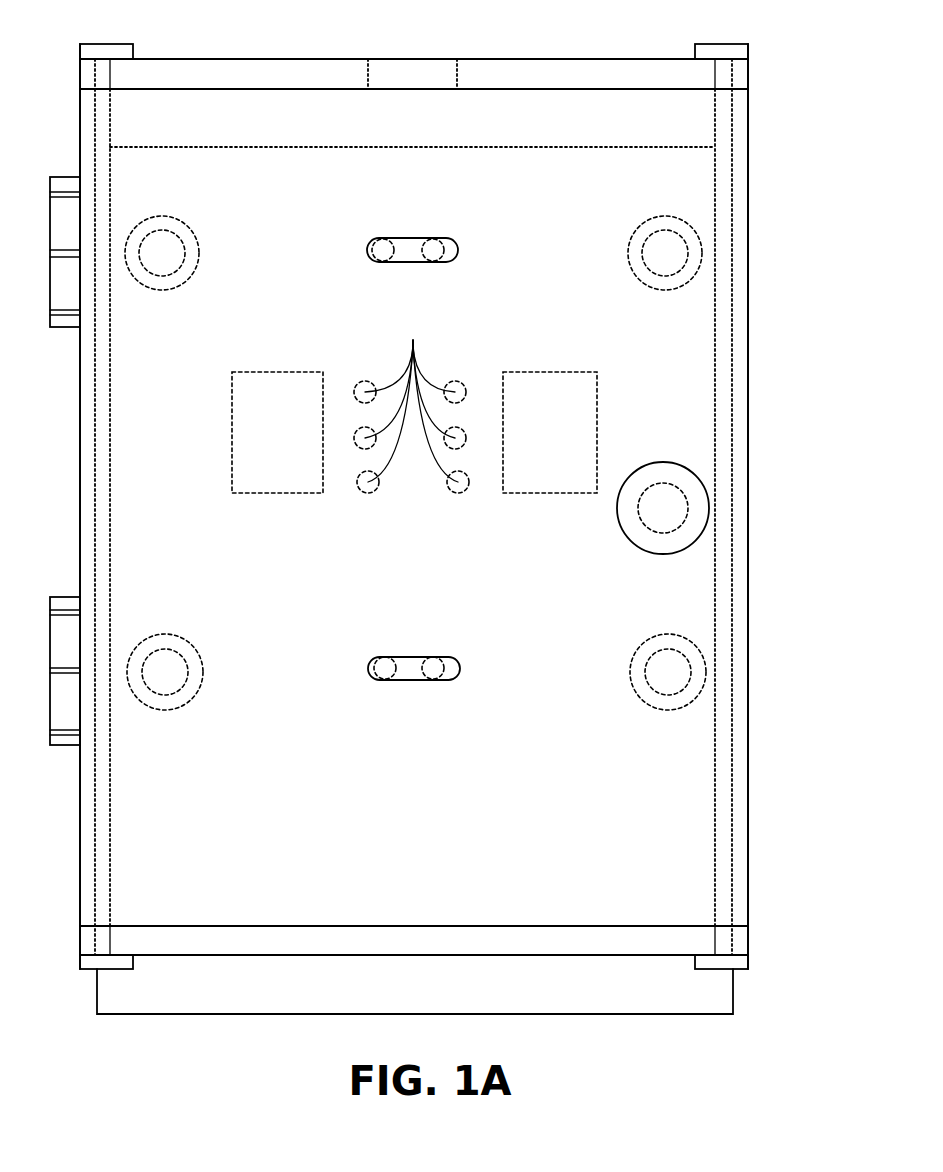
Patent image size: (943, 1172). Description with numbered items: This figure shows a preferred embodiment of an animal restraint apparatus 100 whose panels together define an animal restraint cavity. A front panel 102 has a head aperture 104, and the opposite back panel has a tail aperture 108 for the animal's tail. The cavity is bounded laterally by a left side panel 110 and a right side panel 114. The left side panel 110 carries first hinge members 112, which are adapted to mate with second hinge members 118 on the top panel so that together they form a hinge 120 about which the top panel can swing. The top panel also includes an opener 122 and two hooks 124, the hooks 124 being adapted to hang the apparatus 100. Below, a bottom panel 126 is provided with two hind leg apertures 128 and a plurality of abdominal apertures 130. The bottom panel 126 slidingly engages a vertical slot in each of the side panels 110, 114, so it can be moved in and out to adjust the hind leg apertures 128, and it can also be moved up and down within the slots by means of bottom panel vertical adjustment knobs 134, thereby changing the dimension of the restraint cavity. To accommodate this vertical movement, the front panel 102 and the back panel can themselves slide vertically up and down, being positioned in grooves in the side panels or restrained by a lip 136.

The animal restraint apparatus 100 is at (782, 176).
The front panel 102 is at (637, 957).
The head aperture 104 is at (416, 918).
The tail aperture 108 is at (411, 52).
The left side panel 110 is at (80, 458).
The first hinge members 112 is at (65, 328).
The right side panel 114 is at (748, 360).
The second hinge members 118 is at (65, 223).
The hinge 120 is at (65, 165).
The opener 122 is at (663, 554).
The hooks 124 is at (413, 237).
The bottom panel 126 is at (672, 792).
The hind leg apertures 128 is at (414, 432).
The abdominal apertures 130 is at (411, 405).
The bottom panel vertical adjustment knobs 134 is at (187, 675).
The lip 136 is at (105, 52).